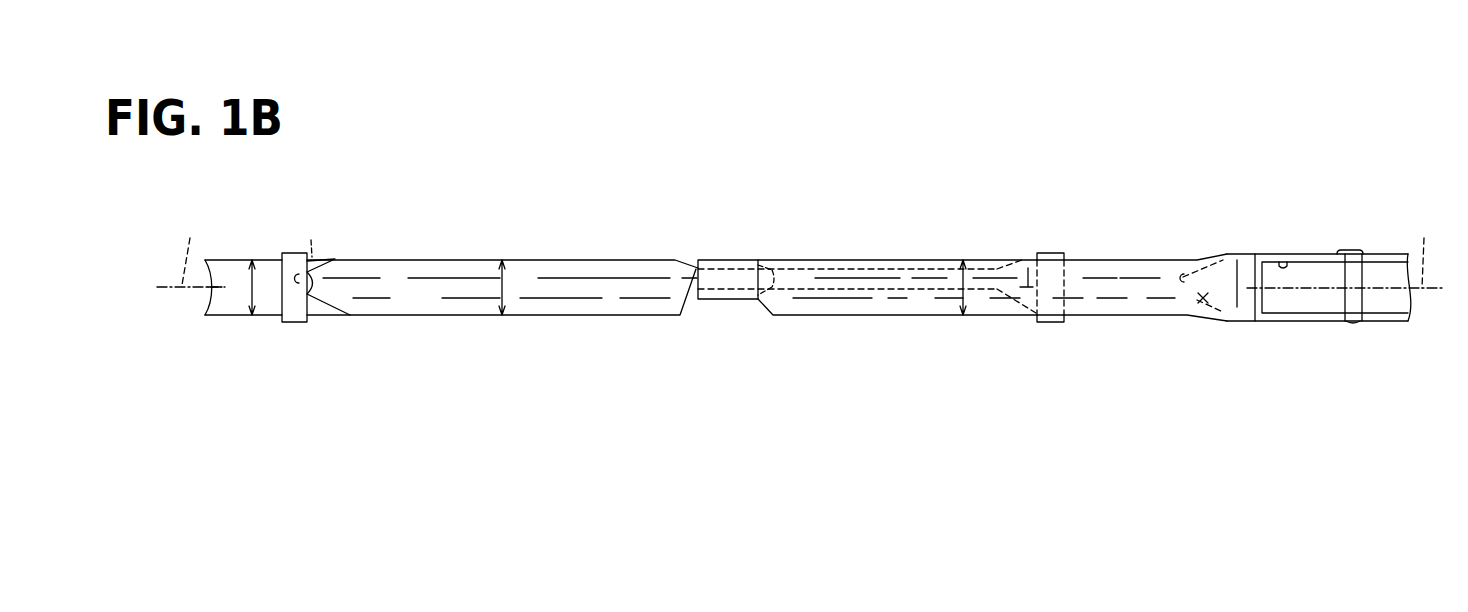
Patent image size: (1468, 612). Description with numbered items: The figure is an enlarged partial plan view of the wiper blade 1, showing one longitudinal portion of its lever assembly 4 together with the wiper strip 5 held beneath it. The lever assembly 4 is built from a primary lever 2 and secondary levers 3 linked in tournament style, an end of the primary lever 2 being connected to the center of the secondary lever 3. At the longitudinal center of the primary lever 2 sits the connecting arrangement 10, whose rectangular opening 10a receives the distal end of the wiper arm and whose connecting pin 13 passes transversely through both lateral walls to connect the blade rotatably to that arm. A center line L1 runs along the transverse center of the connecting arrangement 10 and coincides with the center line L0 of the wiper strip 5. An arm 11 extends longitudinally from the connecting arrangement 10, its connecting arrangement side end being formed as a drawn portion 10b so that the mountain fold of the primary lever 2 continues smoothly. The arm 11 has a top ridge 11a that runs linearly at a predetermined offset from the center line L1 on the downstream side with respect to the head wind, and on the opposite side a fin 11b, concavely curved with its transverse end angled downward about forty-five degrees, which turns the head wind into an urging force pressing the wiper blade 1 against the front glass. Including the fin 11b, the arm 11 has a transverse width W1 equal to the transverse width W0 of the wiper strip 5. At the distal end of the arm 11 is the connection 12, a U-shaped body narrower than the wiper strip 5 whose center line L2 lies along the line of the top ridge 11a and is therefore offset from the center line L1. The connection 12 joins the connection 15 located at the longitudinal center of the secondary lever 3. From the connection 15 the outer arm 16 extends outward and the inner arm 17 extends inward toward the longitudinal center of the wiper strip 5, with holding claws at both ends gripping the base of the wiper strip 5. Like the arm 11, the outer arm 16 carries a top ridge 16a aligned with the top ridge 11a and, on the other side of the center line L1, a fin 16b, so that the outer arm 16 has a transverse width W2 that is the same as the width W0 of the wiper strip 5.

The wiper blade 1 is at (1248, 184).
The primary lever 2 is at (930, 259).
The secondary lever 3 is at (525, 259).
The lever assembly 4 is at (779, 313).
The wiper strip 5 is at (240, 259).
The connecting arrangement 10 is at (1317, 254).
The rectangular opening 10a is at (1283, 264).
The drawn portion 10b is at (1203, 300).
The arm 11 is at (875, 259).
The top ridge 11a is at (1095, 275).
The fin 11b is at (893, 303).
The connection 12 is at (728, 259).
The connecting pin 13 is at (1357, 273).
The connection 15 is at (706, 257).
The outer arm 16 is at (448, 259).
The top ridge 16a is at (592, 277).
The fin 16b is at (428, 298).
The inner arm 17 is at (823, 268).
The center line of wiper strip L0 is at (184, 245).
The center line of connecting arrangement L1 is at (1423, 246).
The center line of connection L2 is at (749, 258).
The transverse width of wiper strip W0 is at (257, 290).
The transverse width of arm W1 is at (966, 296).
The transverse width of outer arm W2 is at (508, 298).